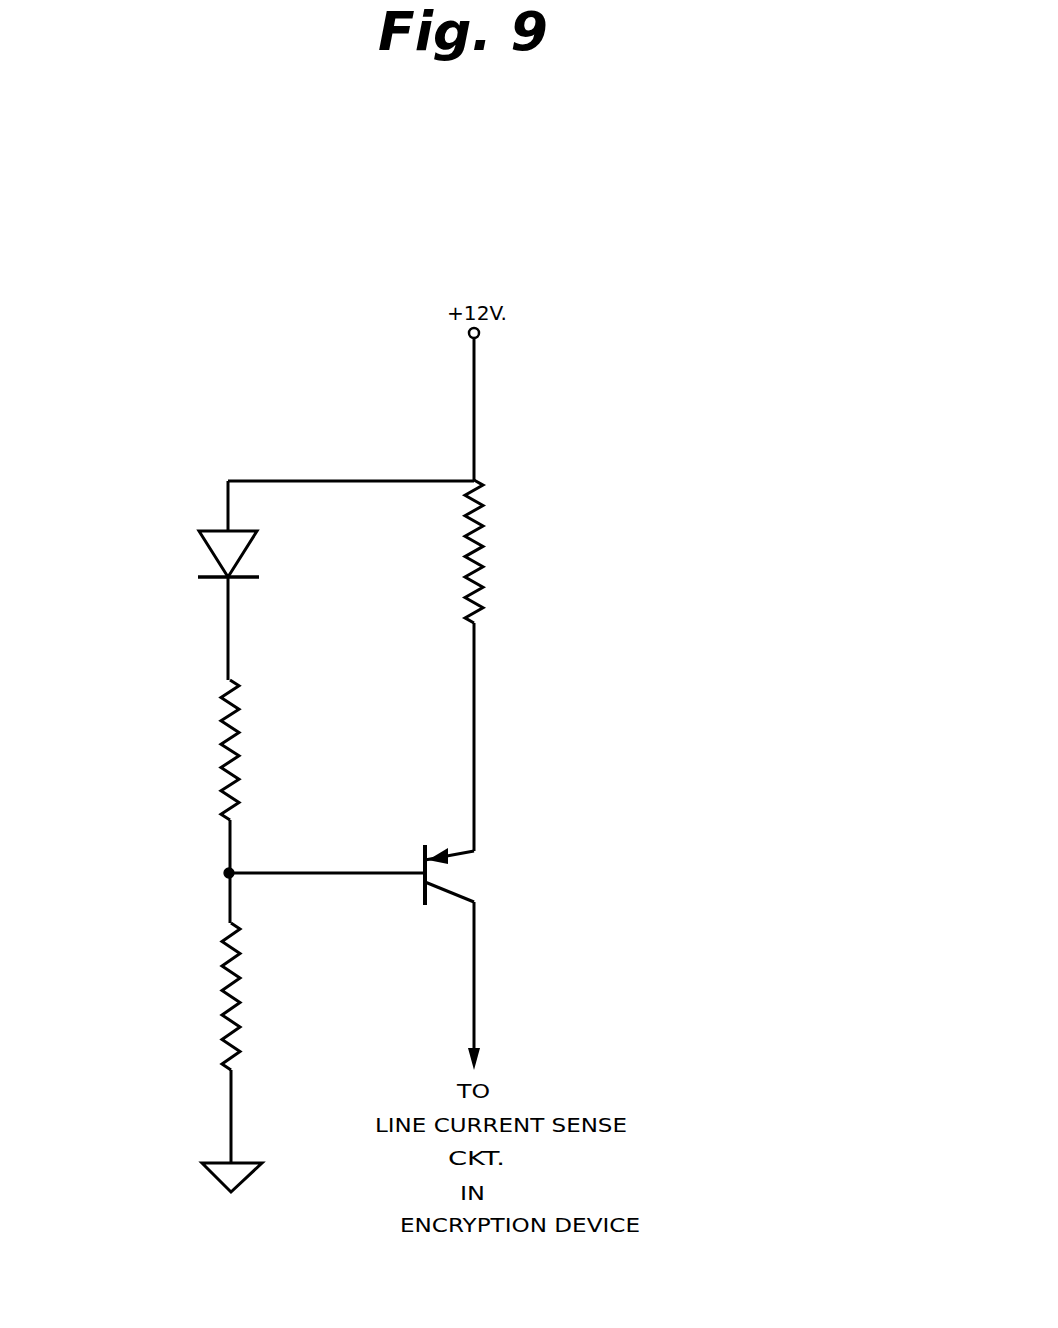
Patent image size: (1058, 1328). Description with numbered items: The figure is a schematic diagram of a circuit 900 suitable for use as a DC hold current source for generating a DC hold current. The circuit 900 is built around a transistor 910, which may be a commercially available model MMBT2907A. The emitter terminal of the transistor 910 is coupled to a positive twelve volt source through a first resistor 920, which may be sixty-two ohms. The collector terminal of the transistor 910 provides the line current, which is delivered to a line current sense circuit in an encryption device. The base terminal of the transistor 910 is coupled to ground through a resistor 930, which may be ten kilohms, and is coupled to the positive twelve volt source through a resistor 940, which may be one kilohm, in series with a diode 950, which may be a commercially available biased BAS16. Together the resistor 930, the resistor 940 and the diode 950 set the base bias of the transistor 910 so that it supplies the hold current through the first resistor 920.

The circuit 900 is at (790, 403).
The transistor 910 is at (420, 866).
The first resistor 920 is at (486, 598).
The resistor 930 is at (225, 980).
The resistor 940 is at (222, 746).
The diode 950 is at (205, 546).